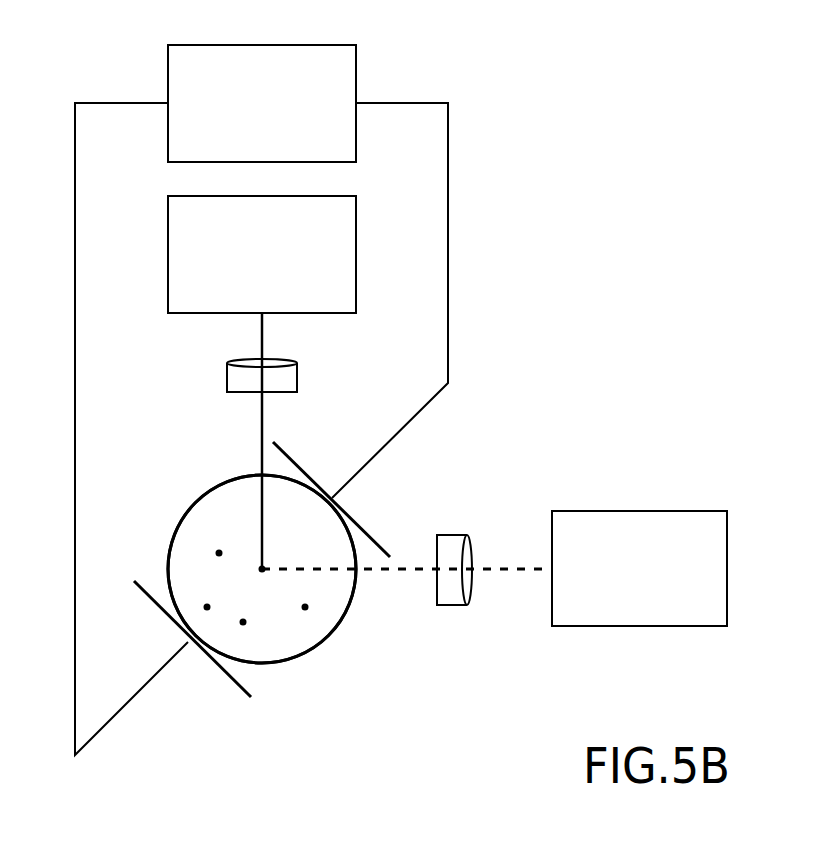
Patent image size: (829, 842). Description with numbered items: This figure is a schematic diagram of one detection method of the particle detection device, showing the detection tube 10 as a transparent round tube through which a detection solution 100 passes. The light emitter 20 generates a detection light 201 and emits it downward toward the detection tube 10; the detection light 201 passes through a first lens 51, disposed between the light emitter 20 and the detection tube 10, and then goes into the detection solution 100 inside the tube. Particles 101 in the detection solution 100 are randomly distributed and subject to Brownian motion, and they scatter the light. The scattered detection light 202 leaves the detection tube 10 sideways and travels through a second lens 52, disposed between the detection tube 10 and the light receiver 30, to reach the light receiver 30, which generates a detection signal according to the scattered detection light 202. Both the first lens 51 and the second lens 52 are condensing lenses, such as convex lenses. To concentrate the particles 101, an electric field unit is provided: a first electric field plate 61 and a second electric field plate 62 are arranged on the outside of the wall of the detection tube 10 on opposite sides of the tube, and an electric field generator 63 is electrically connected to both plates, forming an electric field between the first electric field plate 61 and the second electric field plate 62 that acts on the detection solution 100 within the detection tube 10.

The electric field generator 63 is at (279, 45).
The light emitter 20 is at (338, 196).
The detection light 201 is at (264, 330).
The first lens 51 is at (227, 372).
The detection tube 10 is at (212, 490).
The detection solution 100 is at (170, 543).
The particles 101 is at (305, 607).
The first electric field plate 61 is at (365, 527).
The second electric field plate 62 is at (235, 683).
The scattered detection light 202 is at (498, 572).
The second lens 52 is at (458, 535).
The light receiver 30 is at (643, 511).